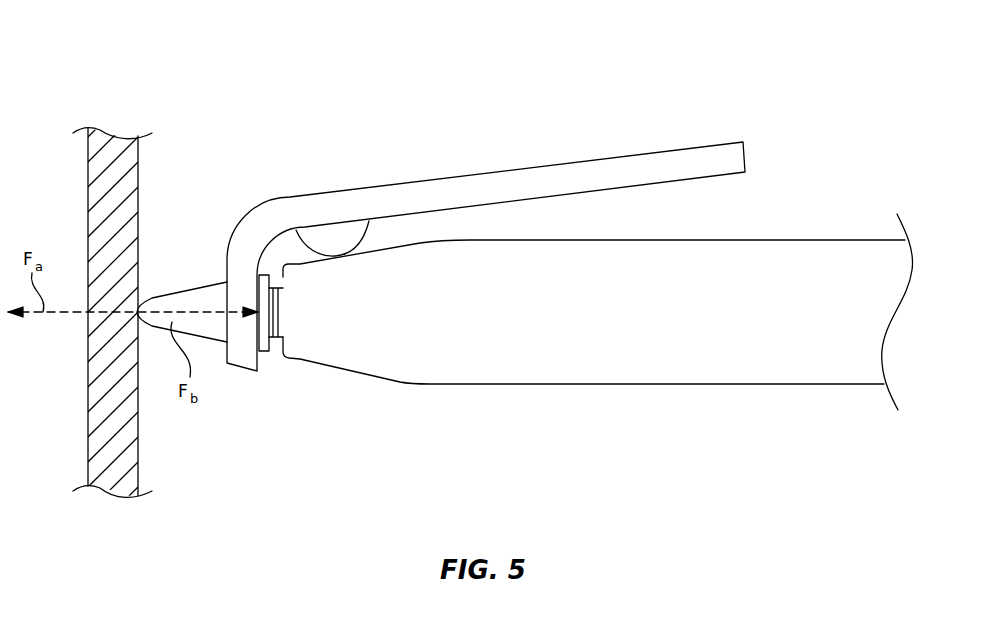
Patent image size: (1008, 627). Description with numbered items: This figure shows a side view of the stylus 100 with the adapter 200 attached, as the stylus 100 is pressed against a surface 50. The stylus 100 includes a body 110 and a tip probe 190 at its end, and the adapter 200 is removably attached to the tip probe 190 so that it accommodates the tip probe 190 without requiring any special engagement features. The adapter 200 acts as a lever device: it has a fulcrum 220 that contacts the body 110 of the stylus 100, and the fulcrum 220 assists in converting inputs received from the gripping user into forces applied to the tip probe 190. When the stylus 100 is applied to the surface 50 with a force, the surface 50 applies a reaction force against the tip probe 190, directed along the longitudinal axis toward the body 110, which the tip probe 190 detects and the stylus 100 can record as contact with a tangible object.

The stylus 100 is at (525, 231).
The surface 50 is at (128, 183).
The tip probe 190 is at (165, 292).
The adapter 200 is at (240, 223).
The fulcrum 220 is at (340, 240).
The body 110 is at (720, 385).